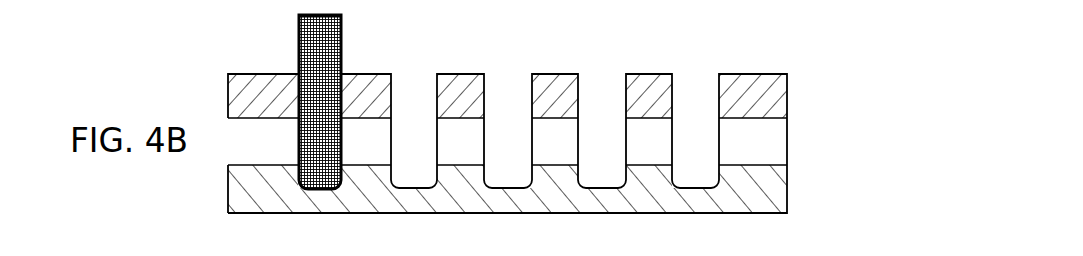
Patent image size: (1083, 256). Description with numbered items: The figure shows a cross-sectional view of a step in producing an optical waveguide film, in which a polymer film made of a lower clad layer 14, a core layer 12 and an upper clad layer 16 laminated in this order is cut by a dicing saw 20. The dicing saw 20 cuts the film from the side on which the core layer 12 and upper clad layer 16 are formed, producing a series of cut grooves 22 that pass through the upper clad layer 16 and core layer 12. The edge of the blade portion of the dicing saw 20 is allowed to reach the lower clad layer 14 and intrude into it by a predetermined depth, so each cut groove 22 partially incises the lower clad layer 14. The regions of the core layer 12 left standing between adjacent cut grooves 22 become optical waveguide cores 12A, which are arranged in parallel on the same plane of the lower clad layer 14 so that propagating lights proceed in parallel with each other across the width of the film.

The core layer 12 is at (788, 150).
The optical waveguide core 12A is at (371, 131).
The lower clad layer 14 is at (788, 196).
The upper clad layer 16 is at (788, 100).
The dicing saw 20 is at (298, 43).
The cut groove 22 is at (413, 78).